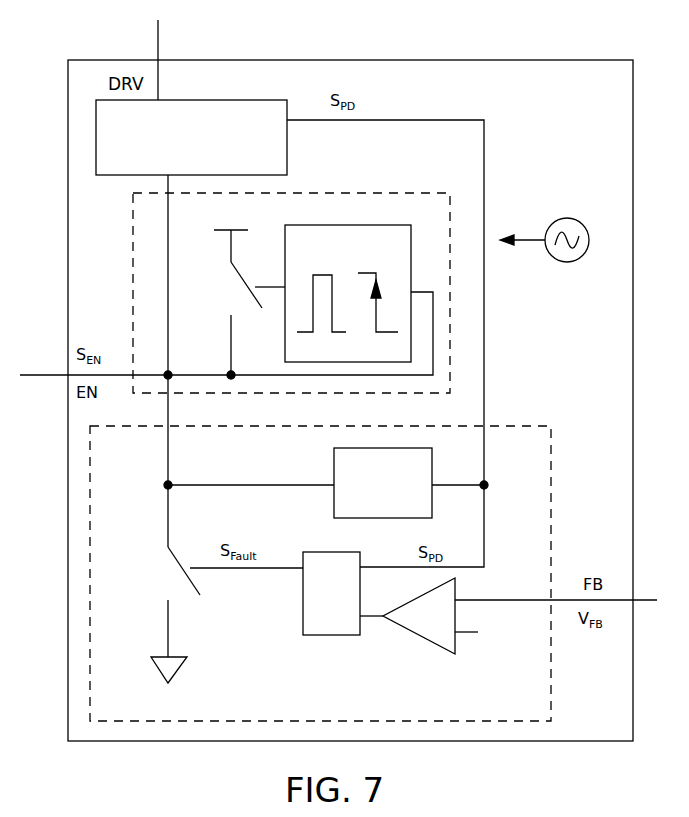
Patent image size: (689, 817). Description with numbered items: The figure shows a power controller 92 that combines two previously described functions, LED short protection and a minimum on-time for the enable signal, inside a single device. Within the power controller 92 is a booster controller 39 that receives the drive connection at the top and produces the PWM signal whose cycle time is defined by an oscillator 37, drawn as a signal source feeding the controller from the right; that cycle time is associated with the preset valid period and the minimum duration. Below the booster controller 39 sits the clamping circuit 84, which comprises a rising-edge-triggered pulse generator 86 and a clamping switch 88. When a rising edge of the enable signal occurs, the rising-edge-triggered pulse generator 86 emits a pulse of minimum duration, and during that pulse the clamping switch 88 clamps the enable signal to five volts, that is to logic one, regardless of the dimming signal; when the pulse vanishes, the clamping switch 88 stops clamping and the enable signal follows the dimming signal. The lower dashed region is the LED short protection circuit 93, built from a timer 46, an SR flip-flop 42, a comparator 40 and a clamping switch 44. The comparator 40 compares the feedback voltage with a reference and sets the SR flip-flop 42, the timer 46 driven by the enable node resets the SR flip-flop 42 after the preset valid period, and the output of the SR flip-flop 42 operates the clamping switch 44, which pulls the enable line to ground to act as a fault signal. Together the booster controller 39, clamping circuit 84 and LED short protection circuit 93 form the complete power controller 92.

The power controller 92 is at (556, 100).
The booster controller 39 is at (181, 159).
The clamping circuit 84 is at (298, 193).
The clamping switch 88 is at (225, 289).
The rising-edge-triggered pulse generator 86 is at (360, 258).
The oscillator 37 is at (588, 250).
The LED short protection circuit 93 is at (520, 426).
The timer 46 is at (373, 509).
The SR flip-flop 42 is at (316, 607).
The comparator 40 is at (418, 636).
The clamping switch 44 is at (160, 577).